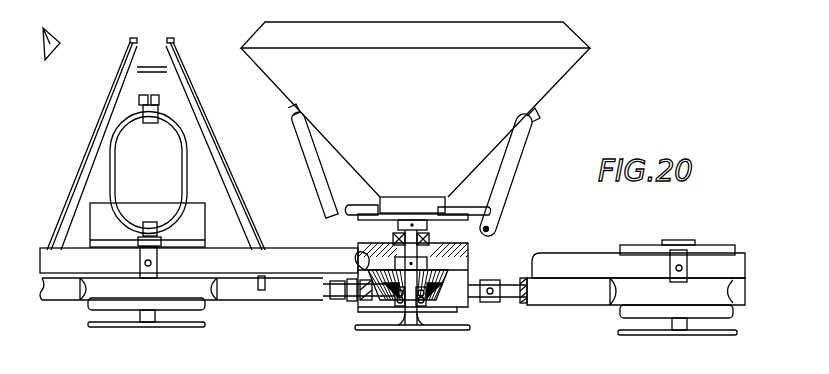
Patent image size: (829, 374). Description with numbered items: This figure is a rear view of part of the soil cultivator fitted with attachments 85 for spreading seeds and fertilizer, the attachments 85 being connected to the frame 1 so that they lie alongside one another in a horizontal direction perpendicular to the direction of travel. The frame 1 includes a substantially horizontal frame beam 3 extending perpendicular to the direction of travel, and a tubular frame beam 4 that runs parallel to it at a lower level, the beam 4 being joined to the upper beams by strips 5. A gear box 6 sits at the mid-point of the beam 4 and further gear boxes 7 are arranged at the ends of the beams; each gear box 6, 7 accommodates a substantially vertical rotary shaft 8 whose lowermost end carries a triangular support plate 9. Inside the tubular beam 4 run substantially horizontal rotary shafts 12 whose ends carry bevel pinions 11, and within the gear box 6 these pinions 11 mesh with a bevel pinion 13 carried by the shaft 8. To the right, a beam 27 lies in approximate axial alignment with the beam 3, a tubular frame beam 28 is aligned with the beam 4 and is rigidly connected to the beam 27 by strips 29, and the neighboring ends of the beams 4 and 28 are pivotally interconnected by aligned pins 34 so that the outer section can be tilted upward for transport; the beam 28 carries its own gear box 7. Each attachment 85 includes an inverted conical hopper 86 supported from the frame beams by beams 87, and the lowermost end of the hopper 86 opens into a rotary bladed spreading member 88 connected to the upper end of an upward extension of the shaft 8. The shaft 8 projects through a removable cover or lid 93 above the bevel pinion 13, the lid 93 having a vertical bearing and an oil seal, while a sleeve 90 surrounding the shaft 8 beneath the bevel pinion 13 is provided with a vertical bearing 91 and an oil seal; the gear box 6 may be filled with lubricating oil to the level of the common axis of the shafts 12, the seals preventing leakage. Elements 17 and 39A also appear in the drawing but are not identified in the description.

The frame 1 is at (272, 248).
The frame beam 3 is at (298, 248).
The tubular frame beam 4 is at (229, 292).
The strips 5 is at (251, 292).
The gear box 6 is at (353, 308).
The gear box 7 is at (105, 240).
The rotary shaft 8 is at (411, 325).
The triangular support plate 9 is at (142, 328).
The bevel pinion 11 is at (358, 262).
The rotary shaft 12 is at (322, 285).
The bevel pinion 13 is at (450, 261).
The hitch loop 17 is at (189, 160).
The beam 27 is at (597, 234).
The tubular frame beam 28 is at (572, 304).
The strips 29 is at (521, 301).
The pins 34 is at (489, 288).
The clamp 39A is at (143, 257).
The attachment 85 is at (56, 33).
The inverted conical hopper 86 is at (290, 82).
The beams 87 is at (312, 157).
The rotary bladed spreading member 88 is at (415, 212).
The sleeve 90 is at (424, 328).
The vertical bearing 91 is at (447, 244).
The removable cover or lid 93 is at (390, 241).